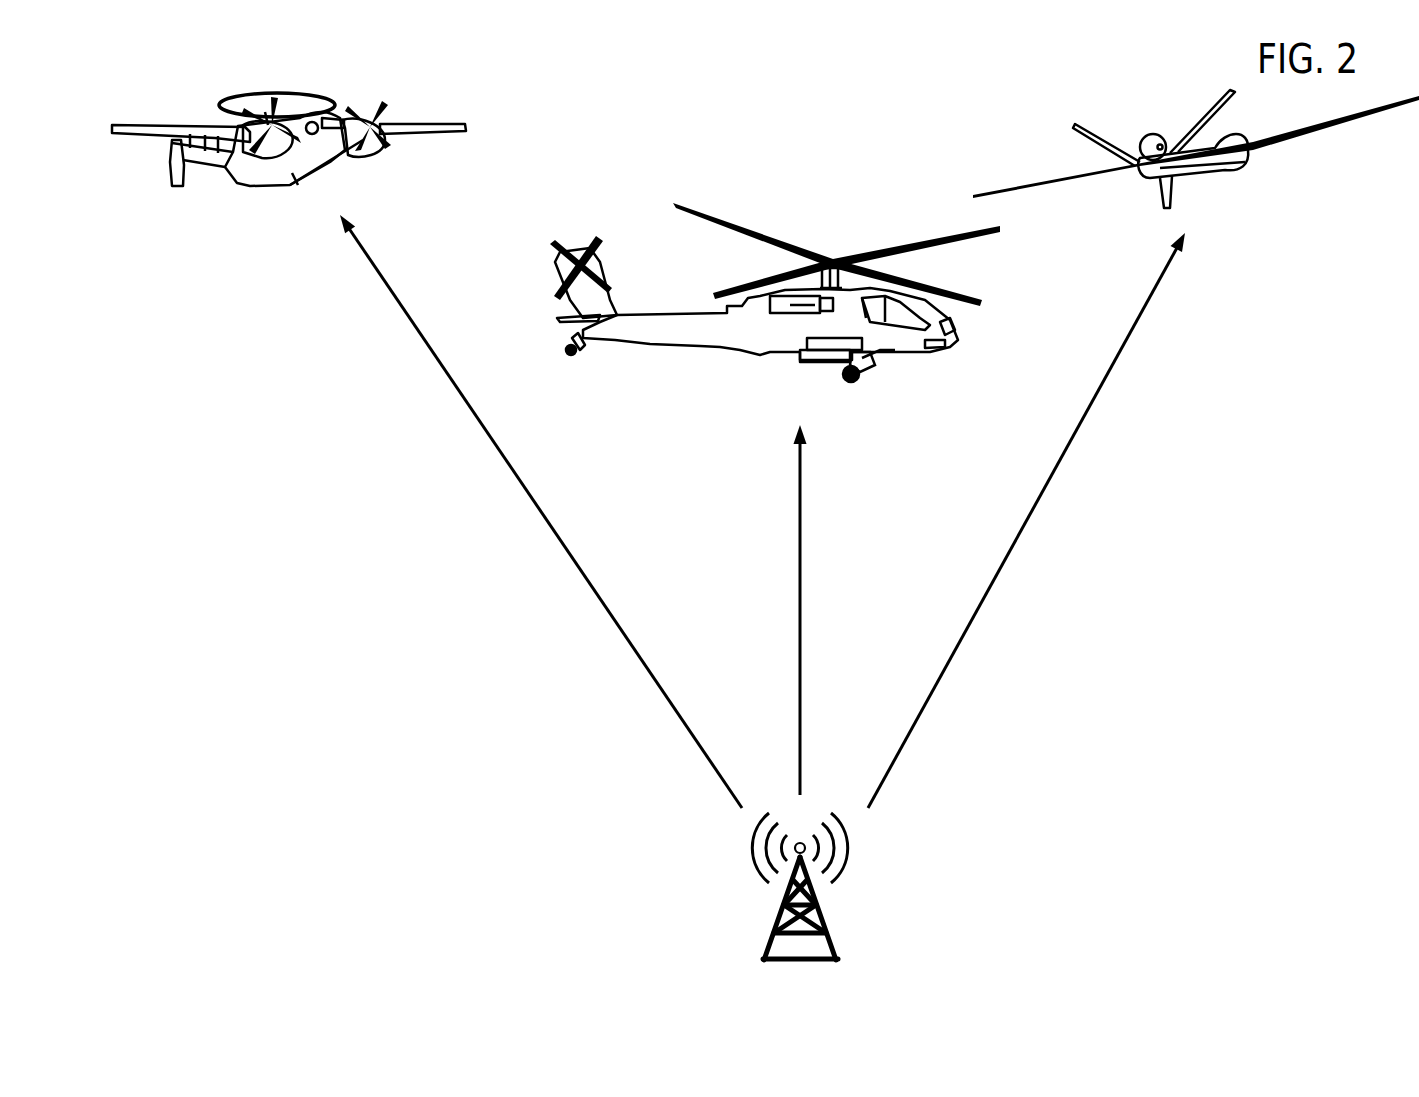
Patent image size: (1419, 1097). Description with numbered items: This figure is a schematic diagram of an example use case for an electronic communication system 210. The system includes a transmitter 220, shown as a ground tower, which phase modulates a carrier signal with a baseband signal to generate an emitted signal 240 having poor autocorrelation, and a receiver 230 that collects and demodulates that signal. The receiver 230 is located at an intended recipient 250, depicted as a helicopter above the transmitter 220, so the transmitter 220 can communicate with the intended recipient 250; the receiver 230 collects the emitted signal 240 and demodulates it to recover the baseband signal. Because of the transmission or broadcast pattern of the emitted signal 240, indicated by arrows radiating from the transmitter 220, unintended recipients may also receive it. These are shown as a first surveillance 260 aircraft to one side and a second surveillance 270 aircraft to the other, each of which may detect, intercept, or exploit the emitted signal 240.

The electronic communication system 210 is at (631, 732).
The transmitter 220 is at (828, 935).
The receiver 230 is at (834, 365).
The emitted signal 240 is at (923, 710).
The intended recipient 250 is at (706, 345).
The first surveillance 260 is at (462, 95).
The second surveillance 270 is at (1067, 175).